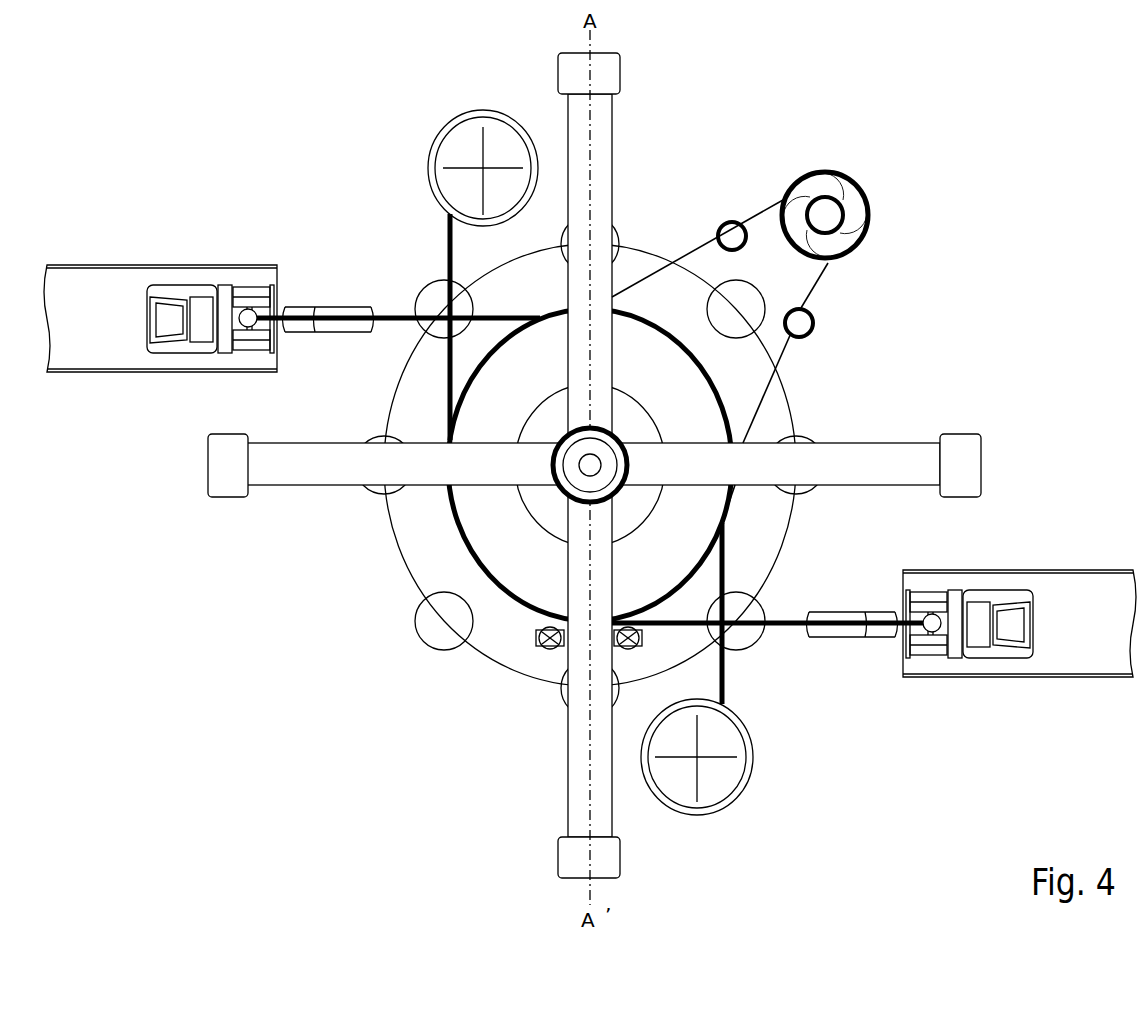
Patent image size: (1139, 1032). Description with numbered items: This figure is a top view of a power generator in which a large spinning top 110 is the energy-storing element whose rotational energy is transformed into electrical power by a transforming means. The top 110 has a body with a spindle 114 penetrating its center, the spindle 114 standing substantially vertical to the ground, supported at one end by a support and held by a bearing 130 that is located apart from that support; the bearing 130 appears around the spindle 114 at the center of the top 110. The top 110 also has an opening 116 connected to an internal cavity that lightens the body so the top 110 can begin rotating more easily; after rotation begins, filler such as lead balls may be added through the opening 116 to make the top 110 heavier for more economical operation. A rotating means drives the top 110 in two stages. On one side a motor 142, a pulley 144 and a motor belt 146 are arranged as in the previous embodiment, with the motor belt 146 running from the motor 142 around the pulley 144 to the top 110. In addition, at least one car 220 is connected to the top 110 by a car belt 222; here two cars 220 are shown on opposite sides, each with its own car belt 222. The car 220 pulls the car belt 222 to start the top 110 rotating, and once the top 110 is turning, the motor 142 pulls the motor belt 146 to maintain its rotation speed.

The top 110 is at (484, 583).
The spindle 114 is at (595, 452).
The opening 116 is at (600, 463).
The bearing 130 is at (532, 575).
The motor 142 is at (843, 206).
The pulley 144 is at (733, 236).
The motor belt 146 is at (767, 378).
The car 220 is at (224, 290).
The car belt 222 is at (350, 307).